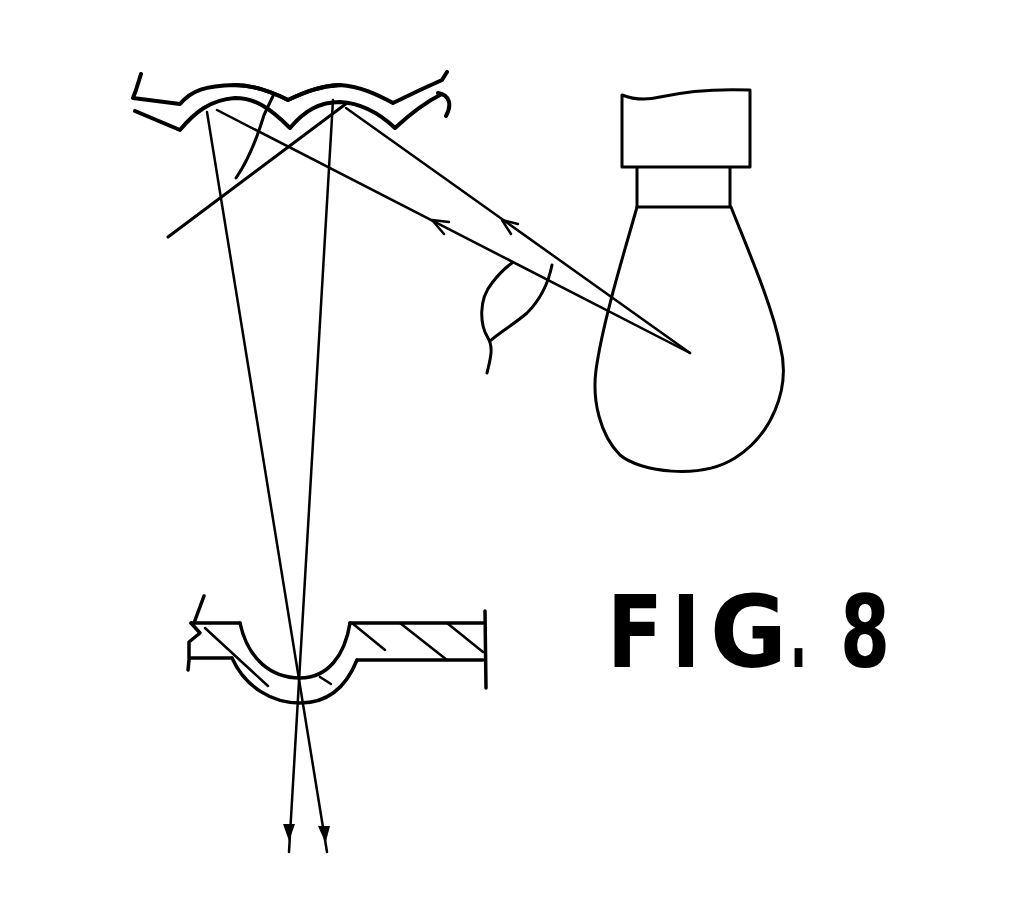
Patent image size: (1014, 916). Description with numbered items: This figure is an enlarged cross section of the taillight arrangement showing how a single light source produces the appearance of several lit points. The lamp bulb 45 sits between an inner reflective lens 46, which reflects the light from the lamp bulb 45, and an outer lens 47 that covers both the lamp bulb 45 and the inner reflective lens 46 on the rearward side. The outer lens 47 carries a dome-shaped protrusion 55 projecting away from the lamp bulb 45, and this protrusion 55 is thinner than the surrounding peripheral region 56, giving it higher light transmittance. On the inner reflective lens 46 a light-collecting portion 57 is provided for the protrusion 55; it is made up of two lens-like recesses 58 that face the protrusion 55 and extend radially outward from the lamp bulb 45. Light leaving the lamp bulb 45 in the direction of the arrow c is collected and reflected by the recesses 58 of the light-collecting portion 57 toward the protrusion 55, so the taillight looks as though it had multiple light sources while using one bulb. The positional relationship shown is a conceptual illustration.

The lamp bulb 45 is at (778, 320).
The inner reflective lens 46 is at (165, 122).
The outer lens 47 is at (286, 708).
The protrusion 55 is at (262, 702).
The peripheral region 56 is at (188, 668).
The light-collecting portion 57 is at (288, 101).
The recess 58 is at (237, 193).
The arrow C c is at (509, 342).